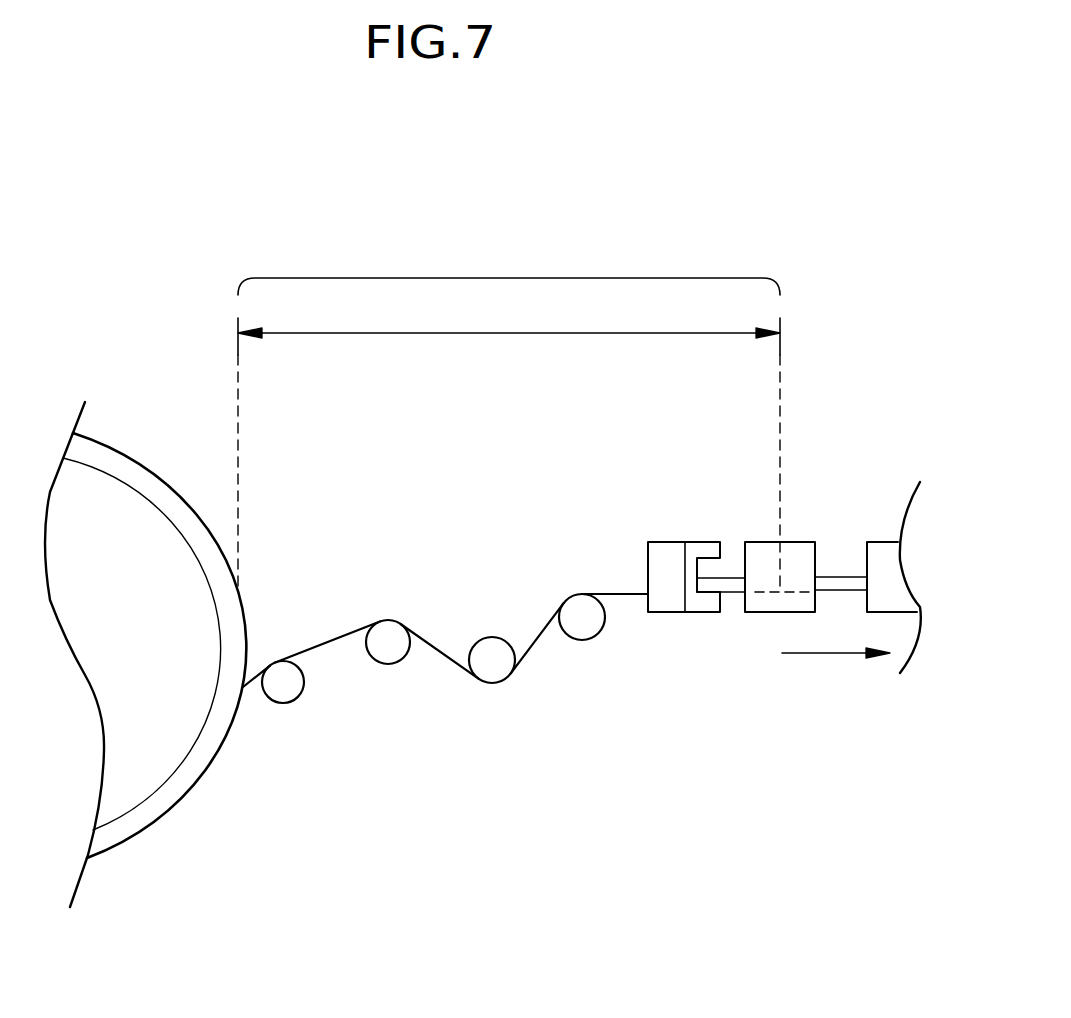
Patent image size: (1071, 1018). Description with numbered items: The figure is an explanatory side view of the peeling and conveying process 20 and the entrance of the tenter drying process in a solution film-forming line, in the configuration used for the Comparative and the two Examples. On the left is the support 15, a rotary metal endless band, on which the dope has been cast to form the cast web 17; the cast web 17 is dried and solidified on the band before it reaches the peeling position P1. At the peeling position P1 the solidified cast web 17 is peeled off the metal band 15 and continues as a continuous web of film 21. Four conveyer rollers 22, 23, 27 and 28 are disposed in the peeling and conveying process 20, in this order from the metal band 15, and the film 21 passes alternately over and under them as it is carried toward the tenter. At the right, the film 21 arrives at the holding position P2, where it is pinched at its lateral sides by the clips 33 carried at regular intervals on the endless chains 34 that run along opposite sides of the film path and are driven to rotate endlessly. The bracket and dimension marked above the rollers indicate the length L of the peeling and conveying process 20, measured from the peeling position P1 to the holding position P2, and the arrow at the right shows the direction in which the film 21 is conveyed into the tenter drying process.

The support 15 is at (137, 466).
The cast web 17 is at (127, 843).
The peeling and conveying process 20 is at (507, 278).
The film 21 is at (360, 624).
The conveyer roller 22 is at (283, 682).
The conveyer roller 23 is at (388, 642).
The conveyer roller 27 is at (490, 660).
The conveyer roller 28 is at (582, 617).
The clip 33 is at (702, 612).
The endless chain 34 is at (840, 577).
The length L is at (509, 445).
The peeling position P1 is at (243, 687).
The holding position P2 is at (784, 590).